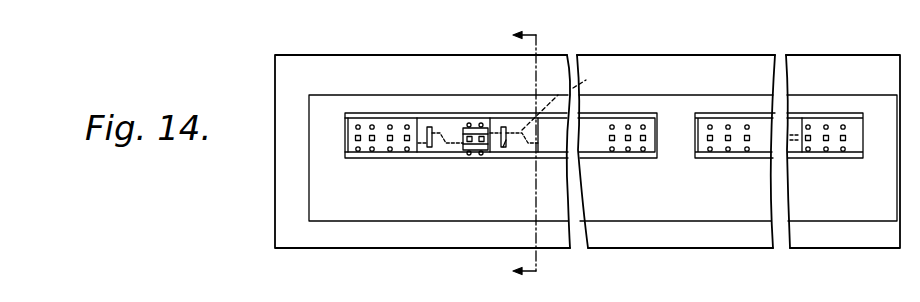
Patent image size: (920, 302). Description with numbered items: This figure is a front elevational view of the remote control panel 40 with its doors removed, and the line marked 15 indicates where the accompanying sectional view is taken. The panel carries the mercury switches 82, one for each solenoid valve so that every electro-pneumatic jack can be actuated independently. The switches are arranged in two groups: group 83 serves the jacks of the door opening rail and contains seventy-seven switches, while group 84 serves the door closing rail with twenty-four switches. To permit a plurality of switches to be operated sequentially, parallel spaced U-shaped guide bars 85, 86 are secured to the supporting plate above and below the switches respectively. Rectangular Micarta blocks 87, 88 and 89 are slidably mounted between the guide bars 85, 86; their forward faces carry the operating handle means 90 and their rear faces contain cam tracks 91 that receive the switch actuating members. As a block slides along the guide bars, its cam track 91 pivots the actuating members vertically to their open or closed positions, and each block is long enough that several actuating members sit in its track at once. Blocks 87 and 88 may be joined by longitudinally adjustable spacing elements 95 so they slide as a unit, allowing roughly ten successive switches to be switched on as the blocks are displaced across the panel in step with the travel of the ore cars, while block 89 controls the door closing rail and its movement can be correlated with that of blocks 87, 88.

The remote control panel 40 is at (302, 63).
The mercury switch 82 is at (358, 128).
The switch group for door opening rail 83 is at (352, 158).
The switch group for door closing rail 84 is at (753, 155).
The upper U-shaped guide bar 85 is at (703, 115).
The lower U-shaped guide bar 86 is at (702, 157).
The Micarta block 87 is at (442, 147).
The Micarta block 88 is at (520, 147).
The Micarta block 89 is at (797, 147).
The operating handle means 90 is at (503, 147).
The cam track 91 is at (567, 96).
The longitudinally adjustable spacing element 95 is at (477, 127).
The section line 15- 15 is at (542, 154).